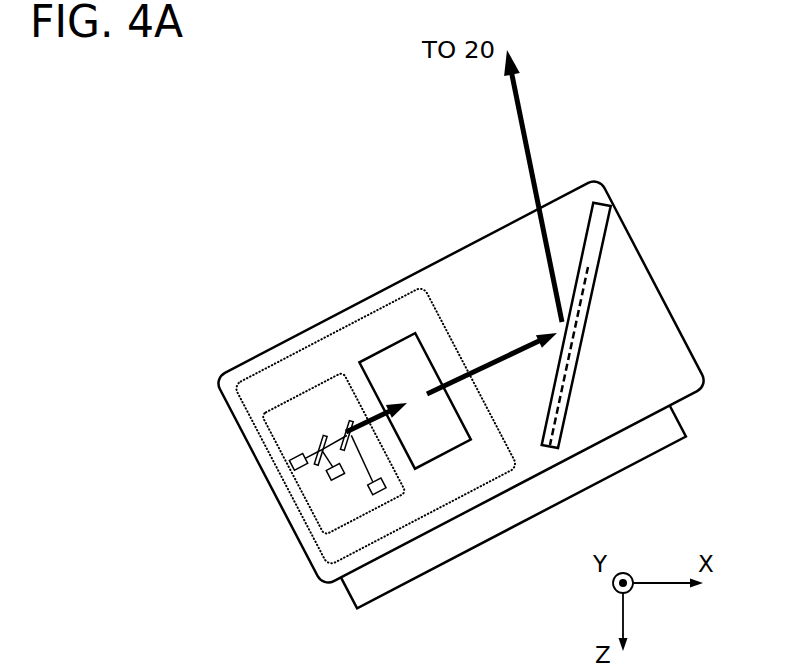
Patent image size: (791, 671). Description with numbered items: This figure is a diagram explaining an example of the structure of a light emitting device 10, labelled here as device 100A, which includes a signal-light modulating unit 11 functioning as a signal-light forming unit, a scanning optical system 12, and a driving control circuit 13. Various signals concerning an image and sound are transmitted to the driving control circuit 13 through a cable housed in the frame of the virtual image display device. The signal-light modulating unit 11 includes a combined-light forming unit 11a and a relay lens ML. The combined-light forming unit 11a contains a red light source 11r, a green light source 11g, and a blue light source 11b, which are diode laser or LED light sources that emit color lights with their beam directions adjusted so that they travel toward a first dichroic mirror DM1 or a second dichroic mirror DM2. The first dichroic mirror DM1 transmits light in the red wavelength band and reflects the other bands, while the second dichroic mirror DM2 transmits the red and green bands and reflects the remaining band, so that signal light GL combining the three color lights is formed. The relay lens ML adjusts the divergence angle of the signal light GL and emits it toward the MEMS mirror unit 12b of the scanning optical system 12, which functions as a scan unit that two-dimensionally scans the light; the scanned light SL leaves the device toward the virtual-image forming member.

The projector 100A is at (345, 105).
The light emitting device 10 is at (340, 183).
The signal-light modulating unit 11 is at (382, 303).
The combined-light forming unit 11a is at (296, 398).
The red light source 11r is at (300, 464).
The green light source 11g is at (328, 472).
The blue light source 11b is at (368, 487).
The first dichroic mirror DM1 is at (318, 447).
The second dichroic mirror DM2 is at (346, 428).
The relay lens ML is at (395, 353).
The signal light GL is at (462, 378).
The scanning light SL is at (517, 133).
The scanning optical system 12 is at (590, 192).
The MEMS mirror unit 12b is at (567, 257).
The driving control circuit 13 is at (617, 465).